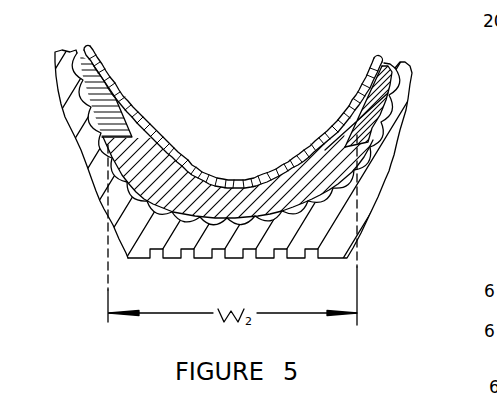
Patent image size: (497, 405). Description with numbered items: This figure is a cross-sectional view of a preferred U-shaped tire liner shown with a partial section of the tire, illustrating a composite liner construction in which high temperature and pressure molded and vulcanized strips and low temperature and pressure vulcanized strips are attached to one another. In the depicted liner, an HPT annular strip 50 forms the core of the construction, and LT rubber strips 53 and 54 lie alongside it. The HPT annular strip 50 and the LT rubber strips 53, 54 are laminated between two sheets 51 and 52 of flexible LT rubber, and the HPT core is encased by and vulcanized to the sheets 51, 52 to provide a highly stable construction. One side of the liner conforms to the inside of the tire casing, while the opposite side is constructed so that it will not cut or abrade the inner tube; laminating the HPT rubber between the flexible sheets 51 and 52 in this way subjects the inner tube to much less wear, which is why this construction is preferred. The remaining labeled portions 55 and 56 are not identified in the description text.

The HPT annular strip 50 is at (211, 203).
The LT rubber sheet 51 is at (147, 128).
The LT rubber sheet 52 is at (390, 100).
The LT rubber strip 53 is at (105, 62).
The LT rubber strip 54 is at (350, 106).
The body right sidewall 55 is at (333, 125).
The body left sidewall 56 is at (120, 145).